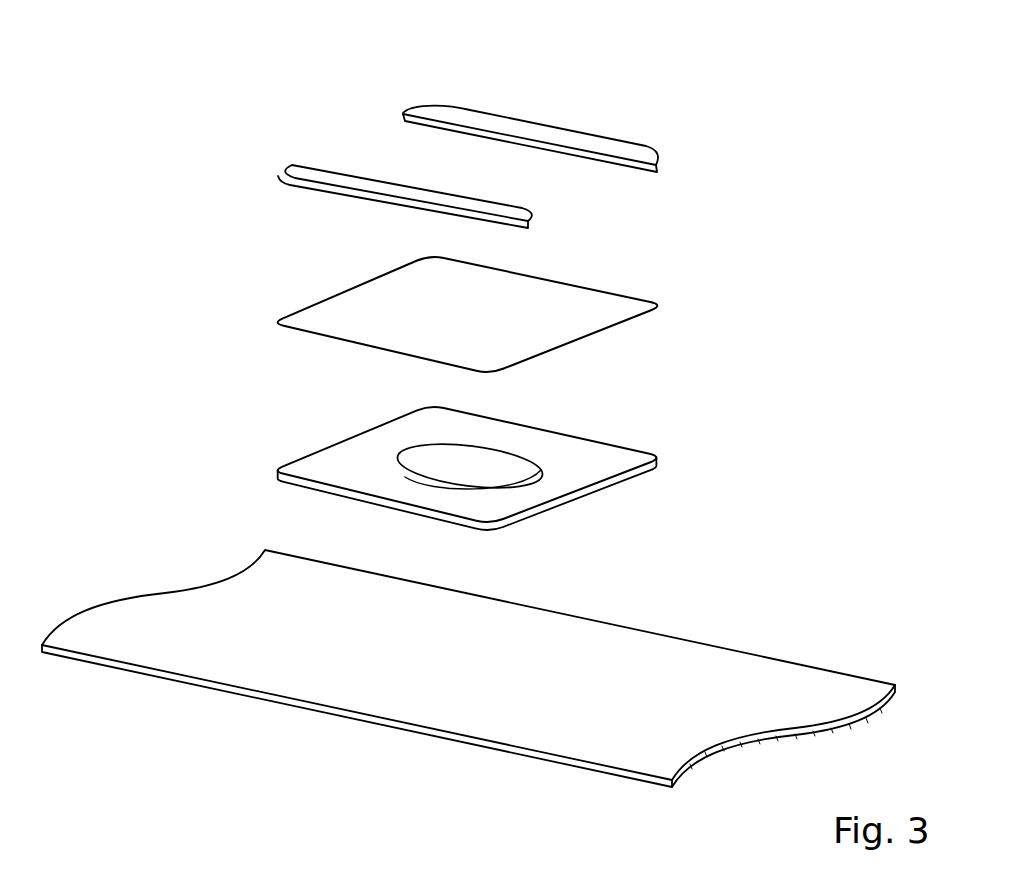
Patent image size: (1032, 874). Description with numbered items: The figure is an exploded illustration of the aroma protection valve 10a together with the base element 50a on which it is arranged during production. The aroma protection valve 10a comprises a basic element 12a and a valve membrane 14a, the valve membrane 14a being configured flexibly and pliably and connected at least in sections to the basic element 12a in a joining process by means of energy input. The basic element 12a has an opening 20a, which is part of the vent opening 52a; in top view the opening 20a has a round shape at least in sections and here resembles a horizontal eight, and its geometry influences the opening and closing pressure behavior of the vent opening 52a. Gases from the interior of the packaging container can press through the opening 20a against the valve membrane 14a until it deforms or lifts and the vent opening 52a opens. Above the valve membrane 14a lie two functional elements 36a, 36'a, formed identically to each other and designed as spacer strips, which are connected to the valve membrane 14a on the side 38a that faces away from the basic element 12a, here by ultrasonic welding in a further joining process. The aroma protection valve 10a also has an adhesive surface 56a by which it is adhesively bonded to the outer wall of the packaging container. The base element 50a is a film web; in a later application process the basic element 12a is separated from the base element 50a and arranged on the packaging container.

The aroma protection valve 10a is at (775, 243).
The functional element 36a is at (587, 132).
The further functional element 36'a is at (405, 140).
The side of the valve membrane 38a is at (342, 326).
The valve membrane 14a is at (468, 289).
The basic element 12a is at (416, 486).
The vent opening 52a is at (350, 418).
The opening 20a is at (417, 451).
The adhesive surface 56a is at (605, 498).
The base element 50a is at (795, 685).